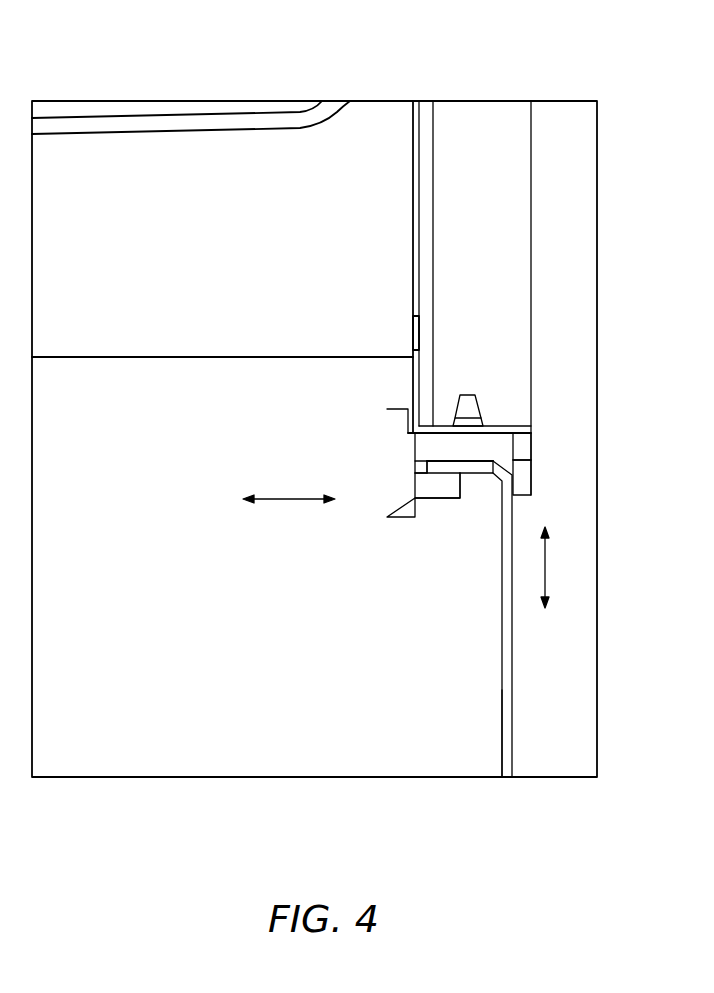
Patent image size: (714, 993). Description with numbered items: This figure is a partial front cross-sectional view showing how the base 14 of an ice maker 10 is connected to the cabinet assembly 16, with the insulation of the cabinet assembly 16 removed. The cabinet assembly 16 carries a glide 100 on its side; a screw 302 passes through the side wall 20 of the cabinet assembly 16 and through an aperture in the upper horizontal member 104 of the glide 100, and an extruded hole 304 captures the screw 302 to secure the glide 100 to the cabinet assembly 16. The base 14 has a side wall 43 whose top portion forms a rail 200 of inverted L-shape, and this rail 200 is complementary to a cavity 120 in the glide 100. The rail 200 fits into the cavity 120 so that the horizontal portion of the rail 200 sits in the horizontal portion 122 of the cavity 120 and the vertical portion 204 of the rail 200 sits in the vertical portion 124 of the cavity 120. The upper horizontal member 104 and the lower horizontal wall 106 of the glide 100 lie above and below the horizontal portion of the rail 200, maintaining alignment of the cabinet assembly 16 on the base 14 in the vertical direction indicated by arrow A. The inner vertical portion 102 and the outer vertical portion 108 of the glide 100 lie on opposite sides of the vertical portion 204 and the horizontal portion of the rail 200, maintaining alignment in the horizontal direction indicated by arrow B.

The ice maker 10 is at (392, 111).
The base 14 is at (488, 647).
The cabinet assembly 16 is at (498, 208).
The side wall 20 is at (513, 262).
The side wall 43 is at (503, 697).
The glide 100 is at (522, 437).
The inner vertical portion 102 is at (397, 472).
The upper horizontal member 104 is at (492, 447).
The lower horizontal wall 106 is at (452, 493).
The outer vertical portion 108 is at (513, 476).
The cavity 120 is at (418, 470).
The horizontal portion 122 is at (413, 474).
The vertical portion 124 is at (533, 480).
The rail 200 is at (442, 462).
The vertical portion 204 is at (534, 483).
The screw 302 is at (467, 402).
The extruded hole 304 is at (478, 418).
The arrow A is at (545, 562).
The arrow B is at (285, 499).